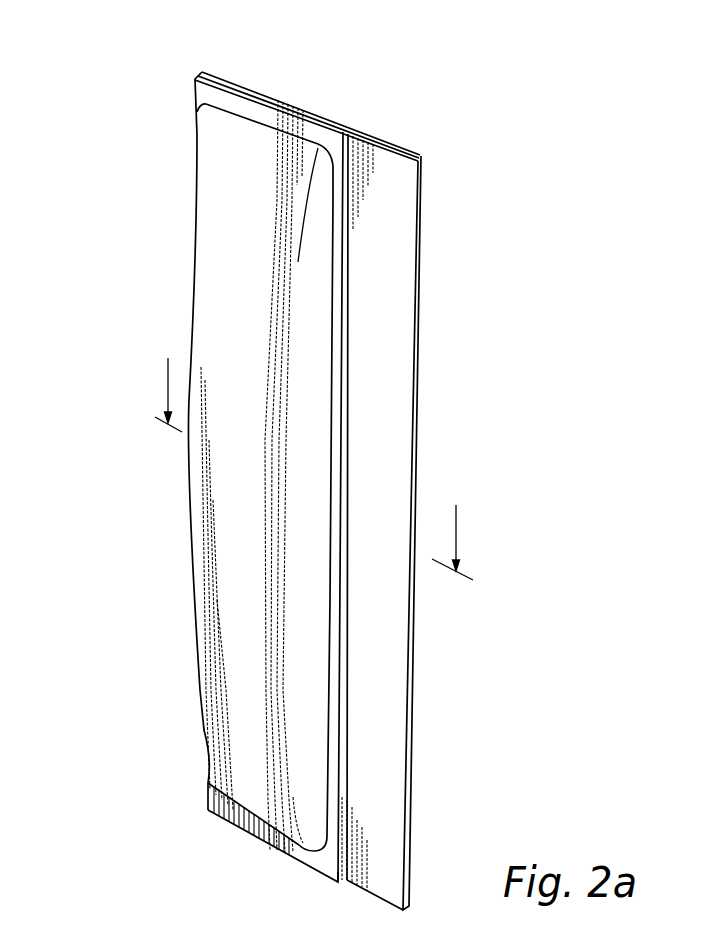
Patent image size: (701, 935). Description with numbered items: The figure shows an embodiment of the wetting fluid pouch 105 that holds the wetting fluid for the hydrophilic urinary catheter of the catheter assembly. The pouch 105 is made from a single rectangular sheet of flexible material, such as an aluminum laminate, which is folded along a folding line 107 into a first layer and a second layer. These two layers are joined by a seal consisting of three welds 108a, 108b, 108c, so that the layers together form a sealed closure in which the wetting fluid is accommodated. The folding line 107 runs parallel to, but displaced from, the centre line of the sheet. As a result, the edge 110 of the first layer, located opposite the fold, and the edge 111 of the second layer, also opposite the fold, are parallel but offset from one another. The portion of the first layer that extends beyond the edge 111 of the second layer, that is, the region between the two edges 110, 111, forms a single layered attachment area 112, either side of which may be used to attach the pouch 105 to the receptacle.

The wetting fluid pouch 105 is at (160, 497).
The folding line 107 is at (196, 623).
The weld 108a is at (284, 107).
The weld 108b is at (337, 272).
The weld 108c is at (247, 822).
The edge of the first layer 110 is at (407, 810).
The edge of the second layer 111 is at (342, 677).
The single layered attachment area 112 is at (392, 393).